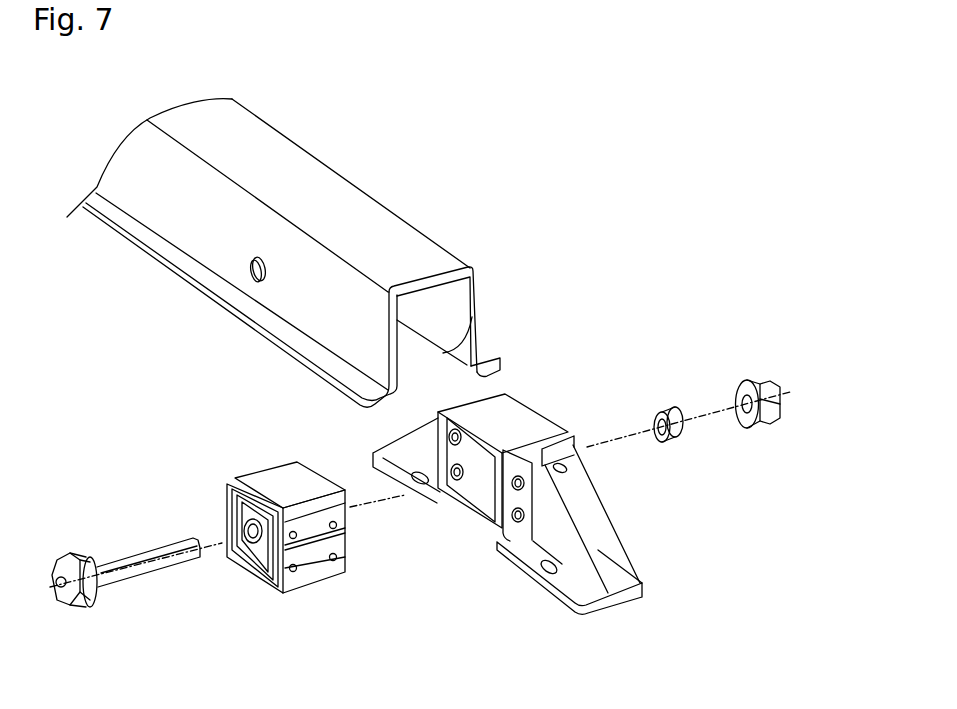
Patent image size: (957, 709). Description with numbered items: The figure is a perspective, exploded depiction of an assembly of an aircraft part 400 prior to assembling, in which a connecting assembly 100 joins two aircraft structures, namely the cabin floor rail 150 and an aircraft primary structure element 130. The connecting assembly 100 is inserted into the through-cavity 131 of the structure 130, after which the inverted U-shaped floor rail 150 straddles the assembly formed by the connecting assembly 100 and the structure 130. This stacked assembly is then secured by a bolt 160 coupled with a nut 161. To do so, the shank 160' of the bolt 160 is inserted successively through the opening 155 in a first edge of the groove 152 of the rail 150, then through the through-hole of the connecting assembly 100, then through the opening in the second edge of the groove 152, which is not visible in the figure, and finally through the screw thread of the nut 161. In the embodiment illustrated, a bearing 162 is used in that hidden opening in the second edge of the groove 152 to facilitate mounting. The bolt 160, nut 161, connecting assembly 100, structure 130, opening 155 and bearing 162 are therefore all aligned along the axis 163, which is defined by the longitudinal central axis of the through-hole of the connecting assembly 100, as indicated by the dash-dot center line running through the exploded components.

The aircraft part 400 is at (545, 131).
The cabin floor rail 150 is at (403, 250).
The groove 152 is at (420, 358).
The opening 155 is at (250, 272).
The connecting assembly 100 is at (267, 484).
The aircraft primary structure element 130 is at (518, 421).
The through-cavity 131 is at (487, 507).
The bolt 160 is at (126, 605).
The shank 160' is at (148, 591).
The nut 161 is at (755, 433).
The bearing 162 is at (680, 410).
The axis 163 is at (372, 500).